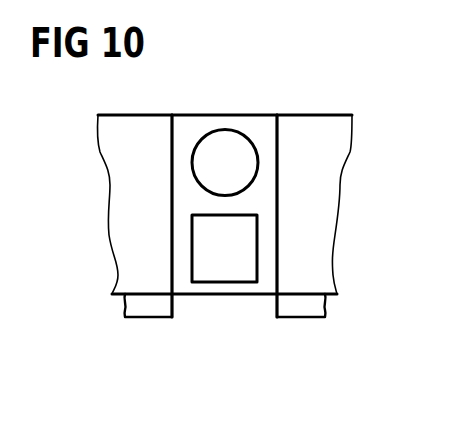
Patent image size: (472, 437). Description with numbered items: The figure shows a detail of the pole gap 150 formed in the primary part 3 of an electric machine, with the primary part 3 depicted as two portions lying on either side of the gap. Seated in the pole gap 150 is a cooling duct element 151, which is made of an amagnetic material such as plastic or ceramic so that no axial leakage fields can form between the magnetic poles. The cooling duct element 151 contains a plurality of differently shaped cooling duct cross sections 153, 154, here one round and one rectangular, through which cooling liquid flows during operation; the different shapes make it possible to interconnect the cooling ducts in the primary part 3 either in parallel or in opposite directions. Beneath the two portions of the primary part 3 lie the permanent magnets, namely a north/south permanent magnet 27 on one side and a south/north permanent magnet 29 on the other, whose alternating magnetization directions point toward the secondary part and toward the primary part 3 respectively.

The primary part 3 is at (127, 178).
The north/south permanent magnets 27 is at (145, 303).
The south/north permanent magnets 29 is at (295, 305).
The pole gap 150 is at (247, 307).
The cooling duct element 151 is at (262, 132).
The cooling duct cross section 153 is at (227, 162).
The cooling duct cross section 154 is at (225, 257).